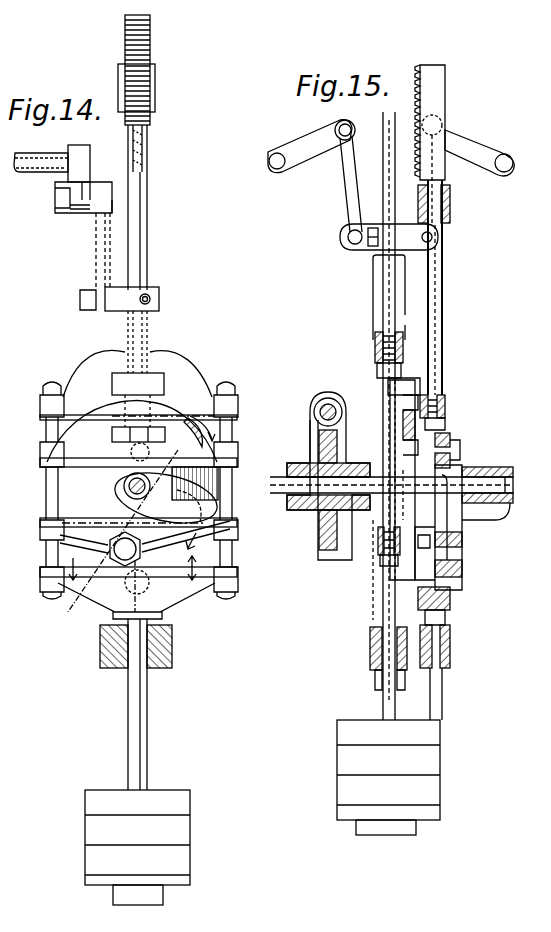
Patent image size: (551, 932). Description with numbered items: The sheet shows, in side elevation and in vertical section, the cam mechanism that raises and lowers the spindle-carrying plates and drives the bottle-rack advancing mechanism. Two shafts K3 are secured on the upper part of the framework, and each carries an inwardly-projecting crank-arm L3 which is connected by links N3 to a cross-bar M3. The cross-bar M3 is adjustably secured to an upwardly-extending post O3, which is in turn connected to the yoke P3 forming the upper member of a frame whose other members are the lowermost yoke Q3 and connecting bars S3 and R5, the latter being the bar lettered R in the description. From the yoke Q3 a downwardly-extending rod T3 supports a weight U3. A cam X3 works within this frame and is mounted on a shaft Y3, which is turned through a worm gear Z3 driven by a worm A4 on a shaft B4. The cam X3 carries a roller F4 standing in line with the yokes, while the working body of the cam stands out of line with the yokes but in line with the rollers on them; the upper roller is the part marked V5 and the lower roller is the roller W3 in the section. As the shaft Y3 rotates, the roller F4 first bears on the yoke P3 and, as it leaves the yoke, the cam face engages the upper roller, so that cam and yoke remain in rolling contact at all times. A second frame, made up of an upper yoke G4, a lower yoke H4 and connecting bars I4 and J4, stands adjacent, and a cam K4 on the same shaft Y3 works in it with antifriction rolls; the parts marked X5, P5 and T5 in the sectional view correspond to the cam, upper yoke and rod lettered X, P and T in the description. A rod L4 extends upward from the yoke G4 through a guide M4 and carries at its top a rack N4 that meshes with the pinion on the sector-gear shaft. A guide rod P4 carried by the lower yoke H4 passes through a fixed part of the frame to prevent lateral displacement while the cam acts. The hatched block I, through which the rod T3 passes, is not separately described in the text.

In FIG. 14, the rack N4 is at (151, 33).
In FIG. 15, the rack N4 is at (445, 75).
In FIG. 14, the upwardly-extending arm or post O3 is at (147, 258).
In FIG. 15, the upwardly-extending arm or post O3 is at (381, 303).
In FIG. 14, the shaft K3 is at (30, 152).
In FIG. 15, the shaft K3 is at (268, 158).
In FIG. 14, the inwardly-projecting crank-arm L3 is at (90, 160).
In FIG. 15, the inwardly-projecting crank-arm L3 is at (492, 120).
In FIG. 14, the link N3 is at (95, 243).
In FIG. 15, the link N3 is at (343, 193).
In FIG. 14, the cross-bar M3 is at (160, 312).
In FIG. 15, the cross-bar M3 is at (345, 255).
In FIG. 14, the upper yoke G4 is at (132, 386).
In FIG. 15, the upper yoke G4 is at (447, 410).
In FIG. 14, the yoke P3 is at (138, 496).
In FIG. 14, the connecting bar I4 is at (44, 432).
In FIG. 14, the connecting bar J4 is at (238, 432).
In FIG. 14, the connecting bar S3 is at (247, 515).
In FIG. 14, the frame bar R5 is at (40, 503).
In FIG. 14, the shaft Y3 is at (124, 484).
In FIG. 15, the shaft Y3 is at (275, 478).
In FIG. 14, the cam X3 is at (142, 507).
In FIG. 14, the lower yoke H4 is at (82, 525).
In FIG. 15, the lower yoke H4 is at (452, 603).
In FIG. 14, the yoke Q3 is at (136, 589).
In FIG. 15, the yoke Q3 is at (378, 552).
In FIG. 14, the roller F4 is at (115, 536).
In FIG. 15, the roller F4 is at (390, 402).
In FIG. 14, the bearing block I is at (143, 646).
In FIG. 14, the rod T3 is at (147, 712).
In FIG. 14, the weight U3 is at (190, 826).
In FIG. 15, the weight U3 is at (343, 718).
In FIG. 15, the guide M4 is at (450, 225).
In FIG. 15, the rod L4 is at (443, 333).
In FIG. 15, the nut P5 is at (374, 346).
In FIG. 15, the worm A4 is at (322, 402).
In FIG. 15, the shaft B4 is at (312, 409).
In FIG. 15, the worm gear Z3 is at (318, 440).
In FIG. 15, the bracket V5 is at (420, 390).
In FIG. 15, the collar X5 is at (412, 448).
In FIG. 15, the cam K4 is at (462, 562).
In FIG. 15, the roller W3 is at (415, 515).
In FIG. 15, the sleeve T5 is at (380, 618).
In FIG. 15, the guide rod P4 is at (443, 702).